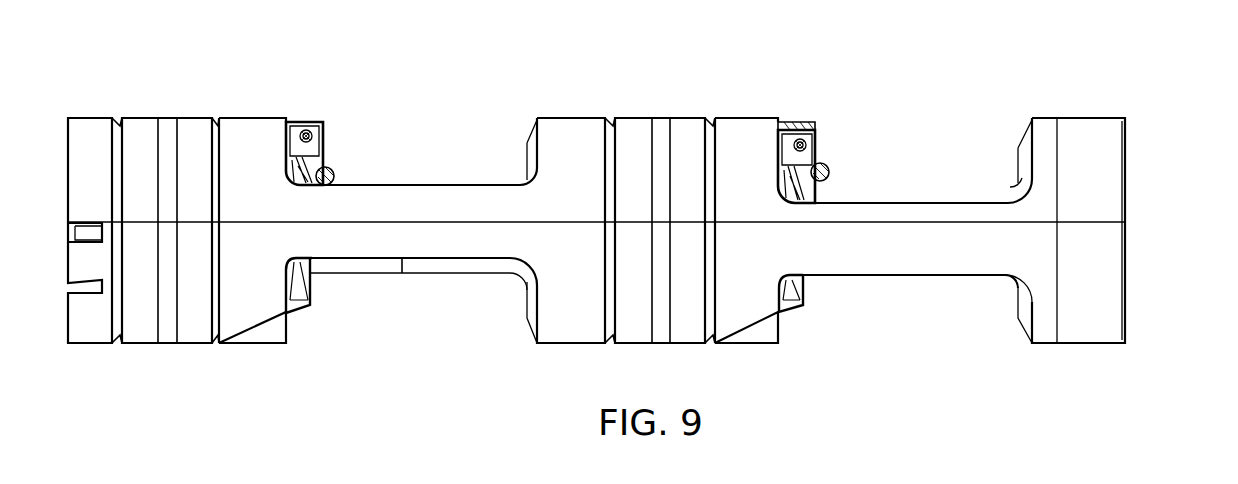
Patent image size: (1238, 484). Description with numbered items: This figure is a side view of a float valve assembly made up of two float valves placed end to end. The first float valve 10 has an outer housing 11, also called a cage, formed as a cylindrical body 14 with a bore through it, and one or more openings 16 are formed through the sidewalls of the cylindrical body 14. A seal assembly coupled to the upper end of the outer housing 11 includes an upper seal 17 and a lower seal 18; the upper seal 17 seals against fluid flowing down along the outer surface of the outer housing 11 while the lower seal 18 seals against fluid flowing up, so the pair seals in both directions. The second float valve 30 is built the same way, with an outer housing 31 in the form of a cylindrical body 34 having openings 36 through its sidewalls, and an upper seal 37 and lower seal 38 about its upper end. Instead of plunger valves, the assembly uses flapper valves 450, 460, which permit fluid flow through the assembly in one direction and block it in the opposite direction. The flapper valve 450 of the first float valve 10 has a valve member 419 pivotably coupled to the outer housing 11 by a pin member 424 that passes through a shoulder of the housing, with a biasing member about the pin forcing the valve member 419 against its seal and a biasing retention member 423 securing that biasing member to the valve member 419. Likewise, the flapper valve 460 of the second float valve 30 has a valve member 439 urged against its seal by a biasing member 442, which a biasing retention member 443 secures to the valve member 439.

The first float valve 10 is at (399, 69).
The outer housing 11 is at (565, 114).
The cylindrical body 14 is at (251, 118).
The openings 16 is at (529, 143).
The upper seal 17 is at (146, 130).
The lower seal 18 is at (190, 130).
The second float valve 30 is at (919, 70).
The outer housing 31 is at (1100, 118).
The cylindrical body 34 is at (1067, 128).
The openings 36 is at (1013, 130).
The upper seal 37 is at (635, 130).
The lower seal 38 is at (681, 130).
The valve member 419 is at (308, 272).
The biasing retention member 423 is at (334, 173).
The pin member 424 is at (310, 128).
The valve member 439 is at (808, 282).
The biasing member 442 is at (809, 122).
The biasing retention member 443 is at (829, 170).
The flapper valve 450 is at (309, 304).
The flapper valve 460 is at (805, 306).